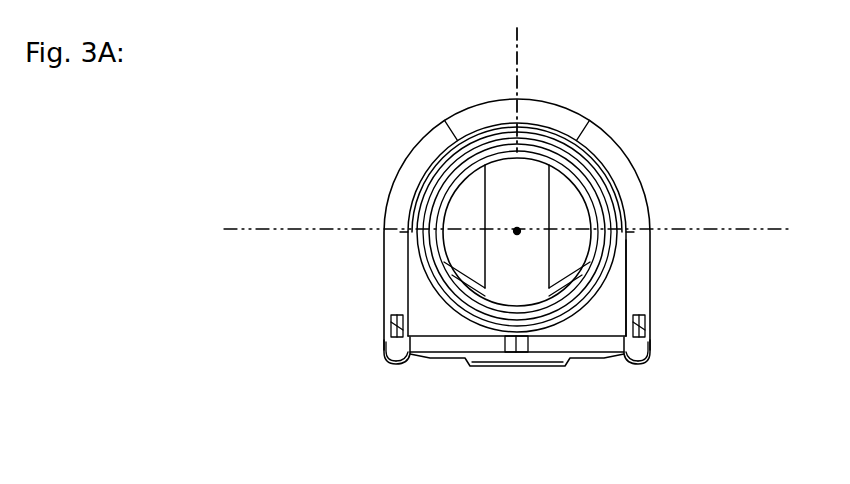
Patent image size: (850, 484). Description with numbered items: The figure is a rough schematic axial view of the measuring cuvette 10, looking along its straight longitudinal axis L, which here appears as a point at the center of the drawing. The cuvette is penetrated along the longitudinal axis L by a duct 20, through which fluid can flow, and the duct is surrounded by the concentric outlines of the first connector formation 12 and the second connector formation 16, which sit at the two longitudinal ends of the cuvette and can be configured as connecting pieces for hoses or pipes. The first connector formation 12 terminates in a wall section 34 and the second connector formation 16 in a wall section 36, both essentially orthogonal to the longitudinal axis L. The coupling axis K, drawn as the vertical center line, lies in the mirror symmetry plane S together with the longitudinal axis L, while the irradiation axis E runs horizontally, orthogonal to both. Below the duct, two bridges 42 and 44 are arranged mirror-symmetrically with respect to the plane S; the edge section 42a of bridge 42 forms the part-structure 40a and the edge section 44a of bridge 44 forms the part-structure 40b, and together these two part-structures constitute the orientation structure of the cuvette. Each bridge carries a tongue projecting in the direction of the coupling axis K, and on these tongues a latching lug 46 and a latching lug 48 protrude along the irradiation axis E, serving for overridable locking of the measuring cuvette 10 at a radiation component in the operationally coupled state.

The measuring cuvette 10 is at (301, 112).
The first connector formation 12 is at (613, 140).
The second connector formation 16 is at (557, 152).
The duct 20 is at (530, 215).
The wall section 34 is at (643, 306).
The wall section 36 is at (596, 323).
The part-structure 40a is at (640, 356).
The part-structure 40b is at (396, 352).
The bridge 42 is at (625, 362).
The edge section 42a is at (695, 371).
The bridge 44 is at (405, 365).
The edge section 44a is at (354, 370).
The latching lug 46 is at (650, 328).
The latching lug 48 is at (392, 325).
The coupling axis K is at (515, 58).
The mirror symmetry plane S is at (482, 90).
The irradiation axis E is at (240, 230).
The longitudinal axis L is at (519, 236).